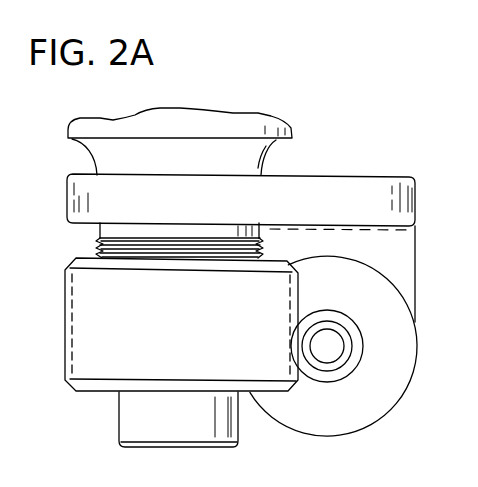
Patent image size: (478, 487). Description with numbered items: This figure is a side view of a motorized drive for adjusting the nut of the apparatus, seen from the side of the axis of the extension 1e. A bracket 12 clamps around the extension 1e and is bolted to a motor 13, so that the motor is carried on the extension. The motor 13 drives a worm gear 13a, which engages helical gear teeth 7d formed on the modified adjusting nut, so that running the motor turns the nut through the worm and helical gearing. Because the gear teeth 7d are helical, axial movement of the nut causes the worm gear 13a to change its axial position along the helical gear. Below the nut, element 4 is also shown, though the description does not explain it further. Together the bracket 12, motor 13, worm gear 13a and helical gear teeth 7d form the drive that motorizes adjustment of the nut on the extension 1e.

The bracket 12 is at (297, 210).
The extension 1e is at (100, 238).
The helical gear teeth 7d is at (62, 368).
The stud 4 is at (120, 443).
The motor 13 is at (303, 436).
The worm gear 13a is at (345, 381).